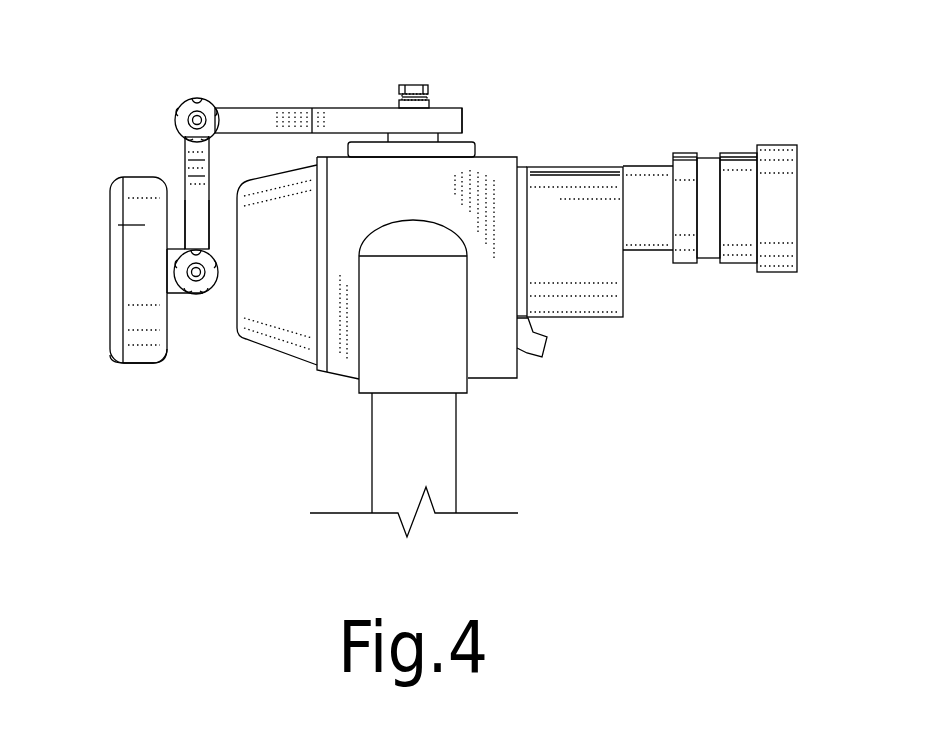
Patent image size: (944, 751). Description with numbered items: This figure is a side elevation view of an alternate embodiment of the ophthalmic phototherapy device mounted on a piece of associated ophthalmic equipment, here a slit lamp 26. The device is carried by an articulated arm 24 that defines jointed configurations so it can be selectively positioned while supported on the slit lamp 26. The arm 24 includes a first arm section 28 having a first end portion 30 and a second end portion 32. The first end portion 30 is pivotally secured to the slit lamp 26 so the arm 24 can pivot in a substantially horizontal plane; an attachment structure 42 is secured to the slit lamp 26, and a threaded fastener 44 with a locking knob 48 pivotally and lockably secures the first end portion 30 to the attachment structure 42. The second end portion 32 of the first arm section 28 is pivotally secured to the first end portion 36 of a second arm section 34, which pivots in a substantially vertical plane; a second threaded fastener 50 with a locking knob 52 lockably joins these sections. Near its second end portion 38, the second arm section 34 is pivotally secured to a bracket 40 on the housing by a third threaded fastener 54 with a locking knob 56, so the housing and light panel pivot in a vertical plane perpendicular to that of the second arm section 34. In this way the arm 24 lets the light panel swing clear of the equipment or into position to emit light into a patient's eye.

The articulated arm 24 is at (306, 106).
The slit lamp 26 is at (375, 196).
The first arm section 28 is at (366, 118).
The first end portion 30 is at (463, 122).
The second end portion 32 is at (252, 108).
The second arm section 34 is at (210, 225).
The first end portion 36 is at (185, 155).
The second end portion 38 is at (190, 238).
The bracket 40 is at (188, 295).
The attachment structure 42 is at (477, 151).
The threaded fastener 44 is at (428, 100).
The locking knob 48 is at (412, 85).
The second threaded fastener 50 is at (178, 110).
The locking knob 52 is at (197, 98).
The third threaded fastener 54 is at (207, 297).
The locking knob 56 is at (203, 292).